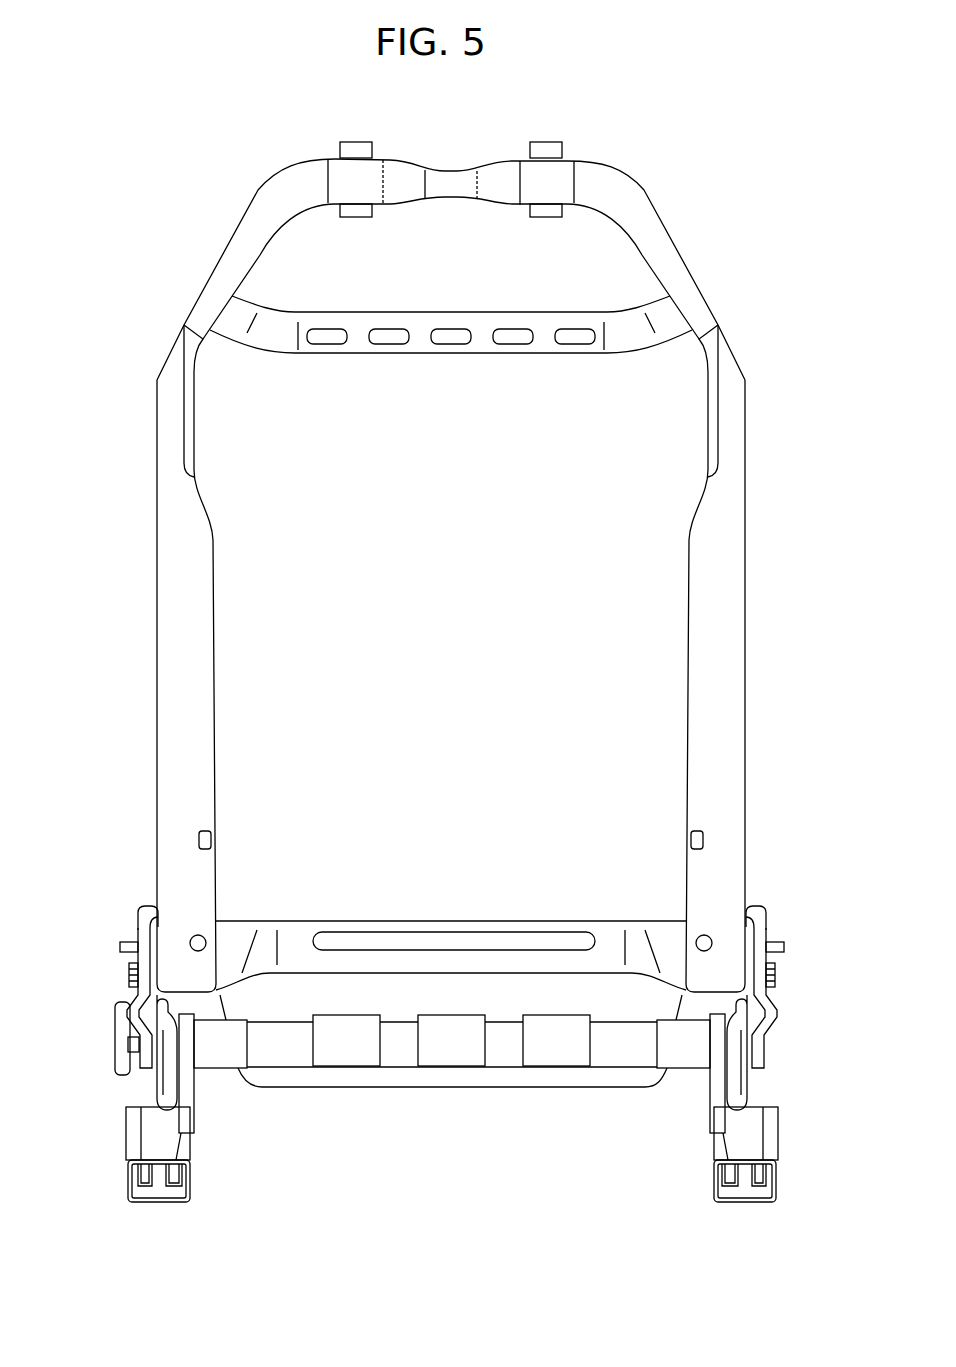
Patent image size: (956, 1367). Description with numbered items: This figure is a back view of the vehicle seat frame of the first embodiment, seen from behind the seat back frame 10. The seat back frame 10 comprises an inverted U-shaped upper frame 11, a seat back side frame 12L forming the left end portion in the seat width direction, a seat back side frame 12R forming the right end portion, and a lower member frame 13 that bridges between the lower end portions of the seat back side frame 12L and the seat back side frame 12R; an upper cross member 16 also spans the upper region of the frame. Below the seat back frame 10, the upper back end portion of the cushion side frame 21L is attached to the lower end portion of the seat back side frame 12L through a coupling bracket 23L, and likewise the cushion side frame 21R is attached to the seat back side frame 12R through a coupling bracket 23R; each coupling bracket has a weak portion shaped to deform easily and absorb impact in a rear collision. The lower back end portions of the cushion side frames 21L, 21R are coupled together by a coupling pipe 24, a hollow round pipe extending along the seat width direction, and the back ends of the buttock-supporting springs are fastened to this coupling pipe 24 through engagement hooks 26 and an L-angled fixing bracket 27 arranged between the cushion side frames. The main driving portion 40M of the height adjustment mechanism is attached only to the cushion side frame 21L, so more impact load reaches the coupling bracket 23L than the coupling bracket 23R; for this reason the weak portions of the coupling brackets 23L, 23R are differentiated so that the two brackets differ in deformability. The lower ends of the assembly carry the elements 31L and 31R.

The seat back frame 10 is at (138, 147).
The upper frame 11 is at (451, 178).
The seat back side frame 12L is at (172, 516).
The seat back side frame 12R is at (733, 516).
The lower member frame 13 is at (652, 932).
The upper cross member 16 is at (418, 326).
The cushion side frame 21L is at (165, 1088).
The cushion side frame 21R is at (738, 1088).
The coupling bracket 23L is at (137, 930).
The coupling bracket 23R is at (765, 930).
The coupling pipe 24 is at (278, 1048).
The engagement hook 26 is at (345, 1048).
The fixing bracket 27 is at (296, 1075).
The left reclining mechanism 31L is at (127, 1185).
The right reclining mechanism 31R is at (778, 1185).
The main driving portion 40M is at (112, 1036).